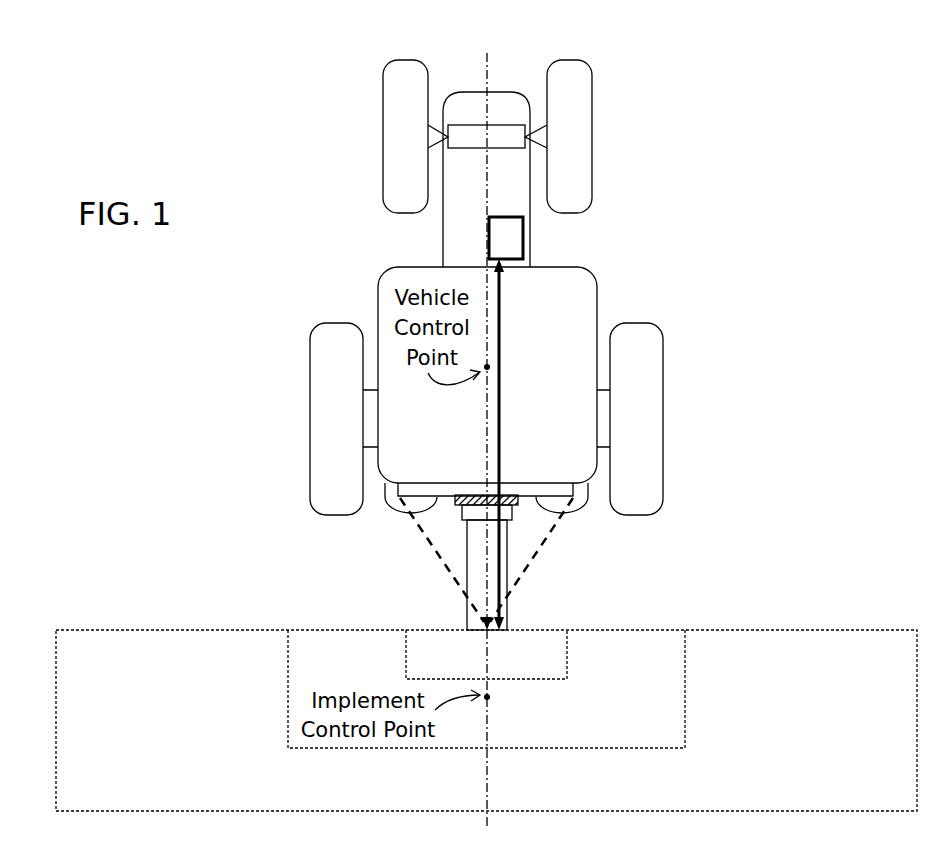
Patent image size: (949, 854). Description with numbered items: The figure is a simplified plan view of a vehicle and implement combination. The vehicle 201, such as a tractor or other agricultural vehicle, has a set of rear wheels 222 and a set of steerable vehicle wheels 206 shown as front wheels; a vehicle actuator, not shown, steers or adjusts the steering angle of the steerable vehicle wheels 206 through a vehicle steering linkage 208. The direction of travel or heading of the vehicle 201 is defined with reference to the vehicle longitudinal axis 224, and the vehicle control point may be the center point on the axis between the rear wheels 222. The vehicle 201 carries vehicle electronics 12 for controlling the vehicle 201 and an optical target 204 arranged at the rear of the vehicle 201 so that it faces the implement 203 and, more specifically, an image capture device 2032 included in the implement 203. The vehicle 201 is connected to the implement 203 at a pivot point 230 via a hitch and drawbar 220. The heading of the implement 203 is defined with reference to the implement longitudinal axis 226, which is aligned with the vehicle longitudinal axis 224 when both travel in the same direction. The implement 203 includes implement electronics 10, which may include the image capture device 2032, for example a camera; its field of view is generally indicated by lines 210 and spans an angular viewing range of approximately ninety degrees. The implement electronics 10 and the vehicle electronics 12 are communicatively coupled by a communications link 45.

The vehicle longitudinal axis 224 is at (483, 68).
The vehicle steering linkage 208 is at (510, 138).
The steerable vehicle wheels 206 is at (390, 118).
The vehicle electronics 12 is at (513, 243).
The vehicle 201 is at (486, 302).
The rear wheels 222 is at (333, 420).
The communications link 45 is at (507, 580).
The lines indicating field of view 210 is at (418, 525).
The optical target 204 is at (523, 506).
The pivot point 230 is at (462, 511).
The hitch and drawbar 220 is at (467, 580).
The implement 203 is at (486, 720).
The implement electronics 10 is at (486, 689).
The image capture device 2032 is at (552, 667).
The implement longitudinal axis 226 is at (489, 818).